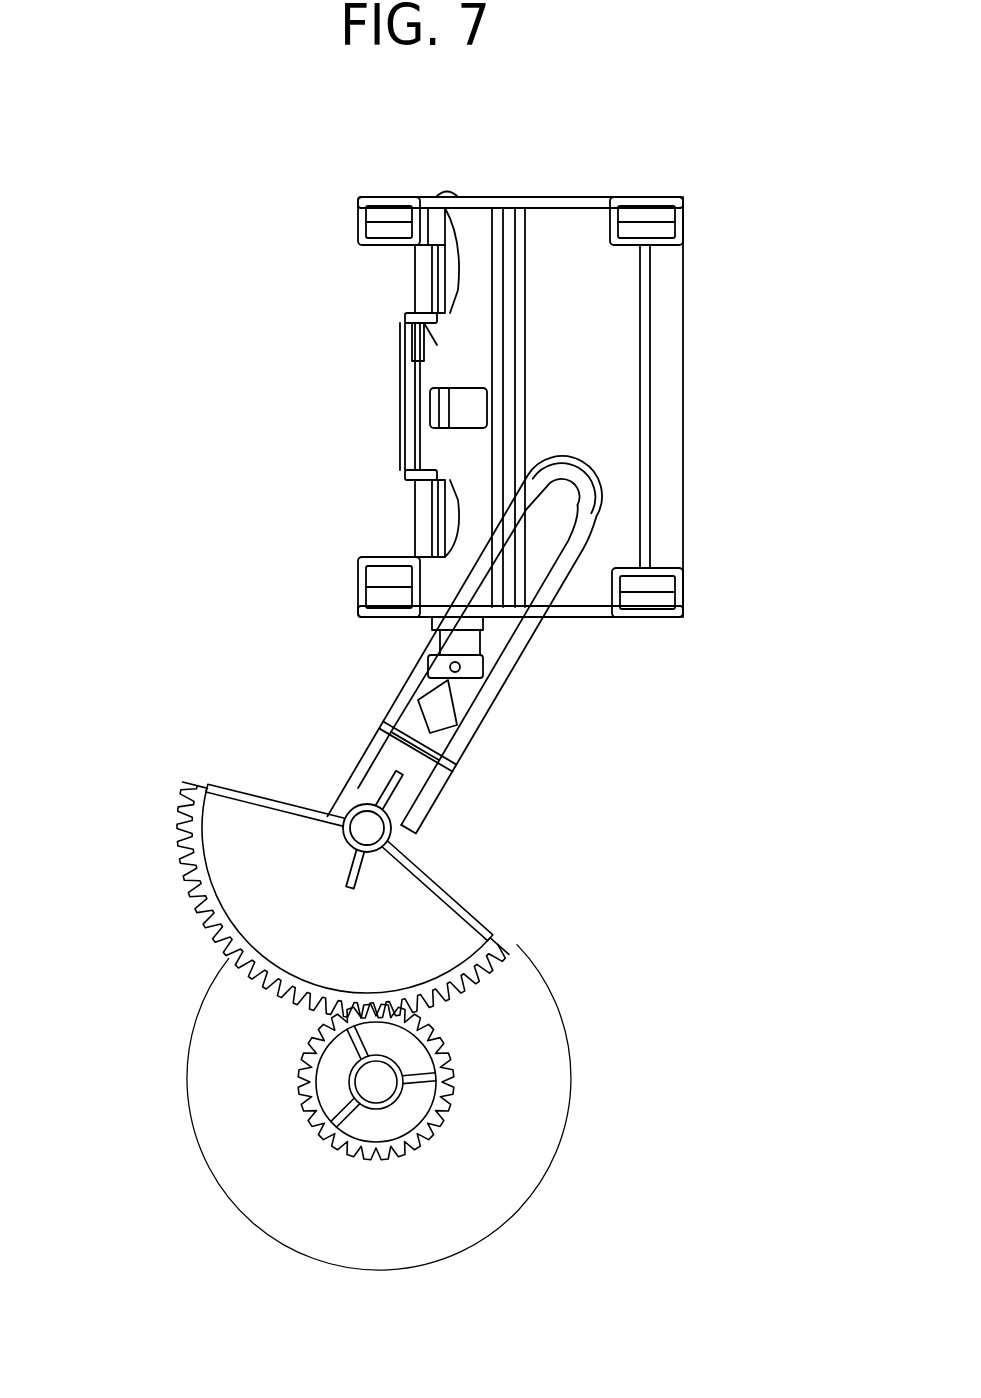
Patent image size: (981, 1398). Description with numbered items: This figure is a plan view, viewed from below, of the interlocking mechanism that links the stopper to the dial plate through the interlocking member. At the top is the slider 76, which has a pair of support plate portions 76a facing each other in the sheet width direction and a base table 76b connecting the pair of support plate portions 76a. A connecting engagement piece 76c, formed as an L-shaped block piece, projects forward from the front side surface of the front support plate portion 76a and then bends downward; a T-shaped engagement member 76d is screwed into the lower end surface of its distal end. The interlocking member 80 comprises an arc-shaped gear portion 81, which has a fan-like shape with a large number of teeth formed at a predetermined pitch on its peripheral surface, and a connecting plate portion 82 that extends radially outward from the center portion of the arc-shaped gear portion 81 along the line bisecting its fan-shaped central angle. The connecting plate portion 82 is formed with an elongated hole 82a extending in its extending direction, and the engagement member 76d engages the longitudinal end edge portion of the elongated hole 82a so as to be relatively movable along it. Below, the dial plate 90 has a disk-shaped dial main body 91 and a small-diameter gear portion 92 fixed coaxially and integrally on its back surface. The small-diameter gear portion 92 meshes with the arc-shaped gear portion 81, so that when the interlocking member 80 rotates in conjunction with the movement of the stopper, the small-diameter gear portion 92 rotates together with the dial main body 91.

The slider 76 is at (384, 302).
The support plate portions 76a is at (553, 203).
The base table 76b is at (593, 345).
The connecting engagement piece 76c is at (478, 636).
The engagement member 76d is at (458, 670).
The interlocking member 80 is at (338, 745).
The arc-shaped gear portion 81 is at (180, 880).
The connecting plate portion 82 is at (407, 733).
The elongated hole 82a is at (553, 500).
The dial plate 90 is at (102, 1152).
The dial main body 91 is at (227, 1113).
The small-diameter gear portion 92 is at (333, 1140).